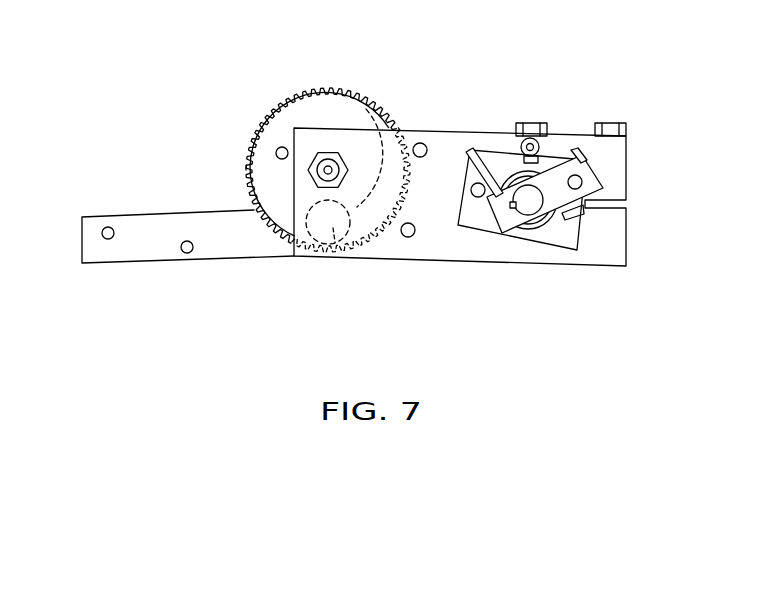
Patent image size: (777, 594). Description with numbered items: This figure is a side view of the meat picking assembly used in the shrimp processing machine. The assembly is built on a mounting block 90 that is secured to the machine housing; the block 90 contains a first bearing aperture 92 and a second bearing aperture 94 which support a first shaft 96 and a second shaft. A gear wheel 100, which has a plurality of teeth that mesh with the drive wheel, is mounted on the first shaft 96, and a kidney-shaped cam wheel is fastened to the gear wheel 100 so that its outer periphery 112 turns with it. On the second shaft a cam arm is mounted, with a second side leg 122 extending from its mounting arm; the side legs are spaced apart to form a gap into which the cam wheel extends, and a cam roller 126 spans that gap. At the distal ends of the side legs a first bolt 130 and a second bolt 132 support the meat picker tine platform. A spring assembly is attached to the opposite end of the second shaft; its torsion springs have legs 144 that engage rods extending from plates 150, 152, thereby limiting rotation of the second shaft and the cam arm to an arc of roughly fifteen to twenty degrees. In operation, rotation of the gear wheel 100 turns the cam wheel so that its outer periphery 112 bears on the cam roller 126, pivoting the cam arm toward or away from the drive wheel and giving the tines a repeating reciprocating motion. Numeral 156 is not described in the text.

The mounting block 90 is at (612, 240).
The first bearing aperture 92 is at (322, 177).
The second bearing aperture 94 is at (538, 207).
The first shaft 96 is at (333, 163).
The gear wheel 100 is at (285, 120).
The outer periphery 112 is at (245, 155).
The second side leg 122 is at (142, 252).
The cam roller 126 is at (343, 257).
The first bolt 130 is at (104, 238).
The second bolt 132 is at (187, 254).
The legs 144 is at (478, 155).
The plate 150 is at (473, 220).
The plate 152 is at (595, 185).
The gear rim 156 is at (307, 90).